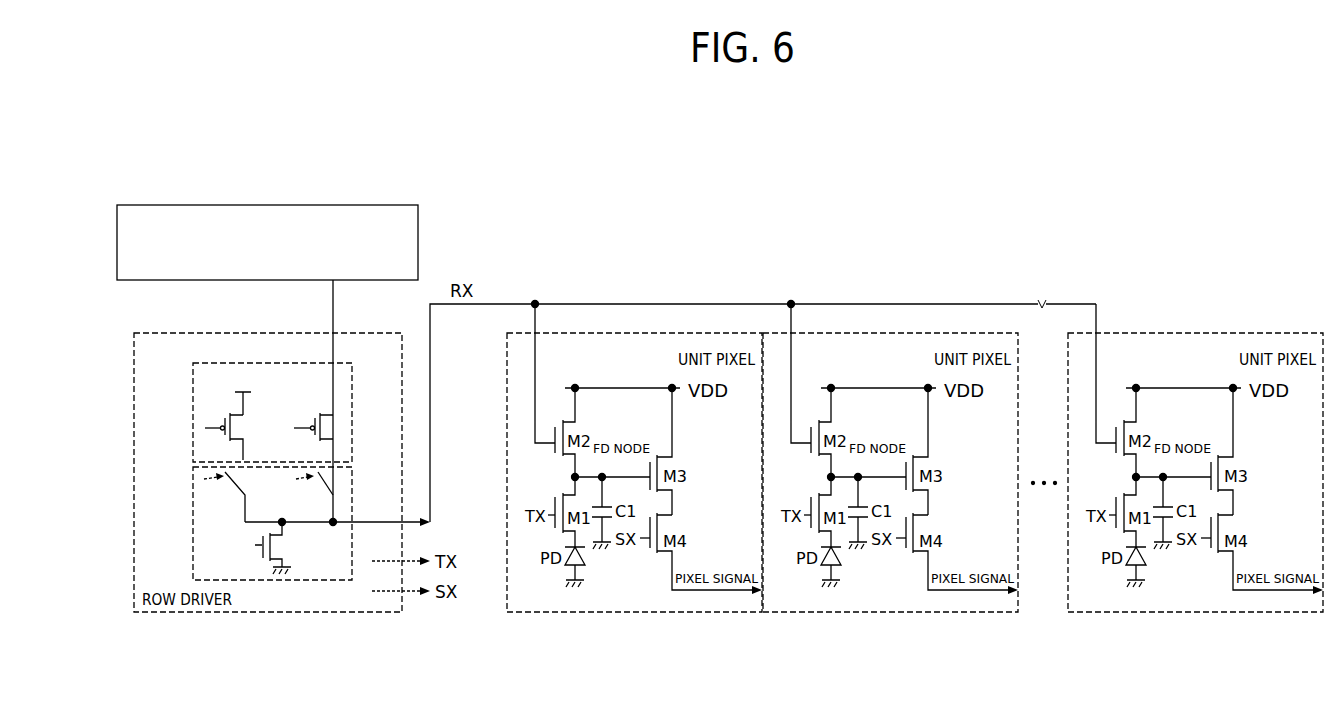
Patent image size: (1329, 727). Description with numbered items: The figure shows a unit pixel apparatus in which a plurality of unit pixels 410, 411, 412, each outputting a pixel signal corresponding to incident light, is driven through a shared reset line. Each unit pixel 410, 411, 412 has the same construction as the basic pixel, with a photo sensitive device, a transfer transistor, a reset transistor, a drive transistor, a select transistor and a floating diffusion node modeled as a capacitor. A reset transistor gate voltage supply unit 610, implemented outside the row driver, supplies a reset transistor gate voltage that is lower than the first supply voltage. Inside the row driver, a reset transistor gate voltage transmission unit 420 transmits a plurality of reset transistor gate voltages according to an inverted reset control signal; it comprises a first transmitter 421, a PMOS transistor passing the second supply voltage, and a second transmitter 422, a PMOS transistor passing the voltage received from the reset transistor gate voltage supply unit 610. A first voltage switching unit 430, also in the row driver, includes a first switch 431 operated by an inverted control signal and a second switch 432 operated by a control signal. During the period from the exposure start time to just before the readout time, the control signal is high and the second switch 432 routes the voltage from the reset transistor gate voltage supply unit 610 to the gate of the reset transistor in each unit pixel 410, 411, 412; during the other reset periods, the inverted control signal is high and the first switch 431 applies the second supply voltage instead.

The reset transistor gate voltage supply unit 610 is at (383, 205).
The reset transistor gate voltage transmission unit 420 is at (287, 399).
The first transmitter 421 is at (247, 422).
The second transmitter 422 is at (335, 423).
The first voltage switching unit 430 is at (267, 523).
The first switch 431 is at (229, 485).
The second switch 432 is at (292, 494).
The unit pixel 410 is at (710, 333).
The unit pixel 411 is at (966, 333).
The unit pixel 412 is at (1270, 333).